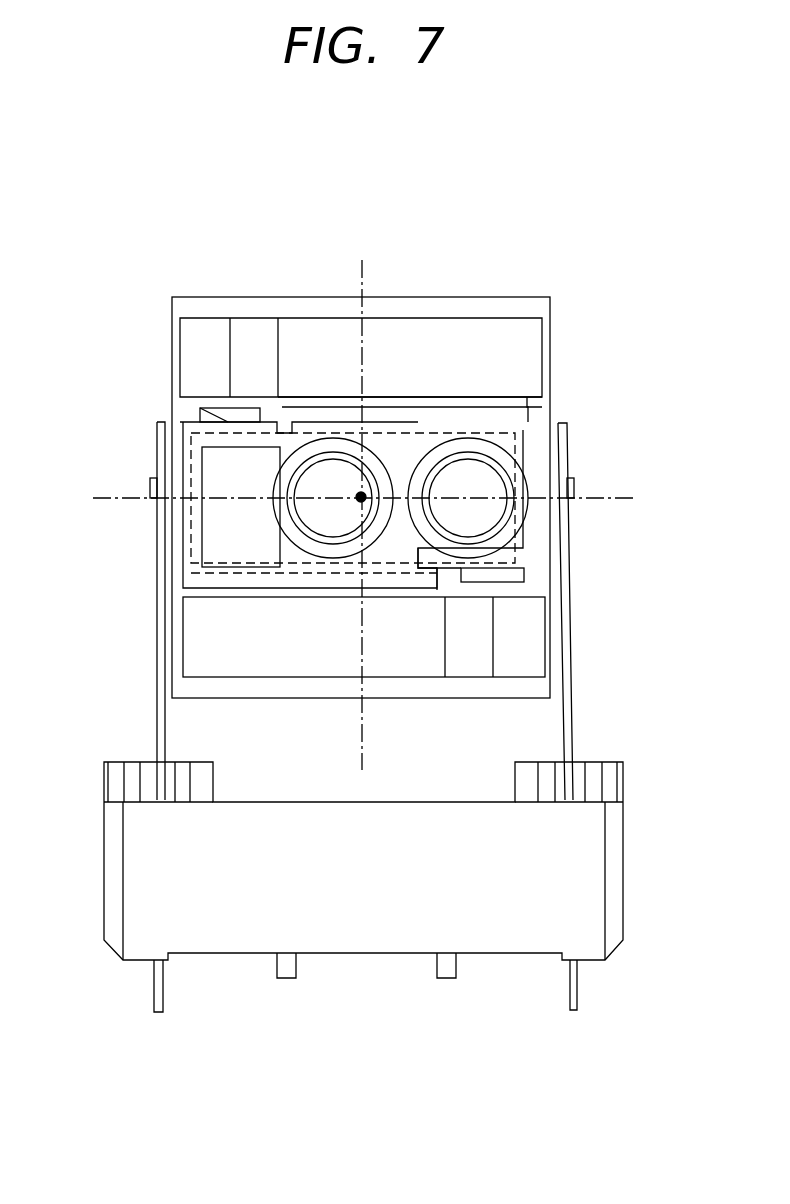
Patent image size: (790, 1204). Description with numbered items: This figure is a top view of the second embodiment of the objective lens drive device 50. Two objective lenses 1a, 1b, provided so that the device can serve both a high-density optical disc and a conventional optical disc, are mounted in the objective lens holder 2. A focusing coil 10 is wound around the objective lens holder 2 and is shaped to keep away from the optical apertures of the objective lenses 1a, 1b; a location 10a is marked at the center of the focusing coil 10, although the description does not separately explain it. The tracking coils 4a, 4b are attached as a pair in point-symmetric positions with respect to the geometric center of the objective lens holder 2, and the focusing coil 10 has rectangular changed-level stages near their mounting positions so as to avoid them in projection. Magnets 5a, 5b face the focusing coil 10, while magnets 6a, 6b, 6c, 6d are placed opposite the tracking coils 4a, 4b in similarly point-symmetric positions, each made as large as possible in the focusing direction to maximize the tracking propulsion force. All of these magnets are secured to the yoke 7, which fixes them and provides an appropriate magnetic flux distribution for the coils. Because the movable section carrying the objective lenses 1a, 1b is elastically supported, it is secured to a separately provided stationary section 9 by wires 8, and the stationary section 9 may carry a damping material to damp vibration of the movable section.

The objective lens drive device 50 is at (296, 220).
The yoke 7 is at (518, 305).
The magnet 6a is at (195, 362).
The magnet 6b is at (255, 330).
The magnet 5a is at (416, 345).
The tracking coil 4a is at (205, 408).
The focusing coil 10 is at (533, 415).
The center of sensor unit 10a is at (361, 497).
The objective lens holder 2 is at (205, 541).
The objective lens 1a is at (330, 505).
The objective lens 1b is at (482, 482).
The tracking coil 4b is at (522, 580).
The magnet 5b is at (205, 645).
The magnet 6c is at (530, 637).
The magnet 6d is at (478, 652).
The wire 8 is at (158, 680).
The stationary section 9 is at (585, 878).